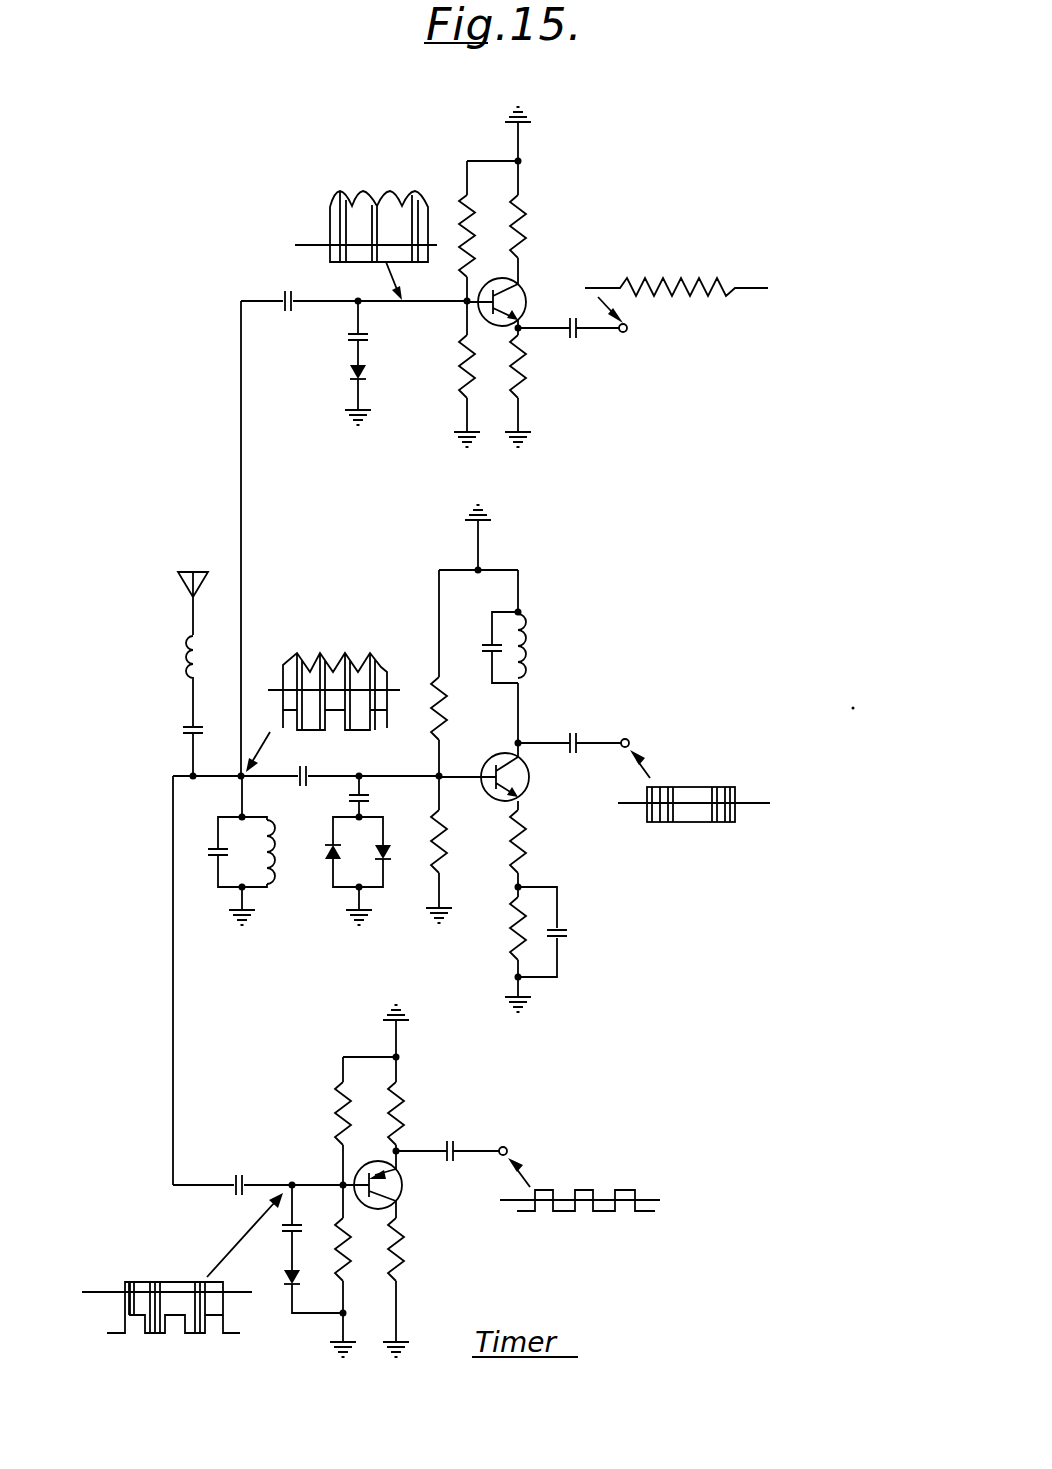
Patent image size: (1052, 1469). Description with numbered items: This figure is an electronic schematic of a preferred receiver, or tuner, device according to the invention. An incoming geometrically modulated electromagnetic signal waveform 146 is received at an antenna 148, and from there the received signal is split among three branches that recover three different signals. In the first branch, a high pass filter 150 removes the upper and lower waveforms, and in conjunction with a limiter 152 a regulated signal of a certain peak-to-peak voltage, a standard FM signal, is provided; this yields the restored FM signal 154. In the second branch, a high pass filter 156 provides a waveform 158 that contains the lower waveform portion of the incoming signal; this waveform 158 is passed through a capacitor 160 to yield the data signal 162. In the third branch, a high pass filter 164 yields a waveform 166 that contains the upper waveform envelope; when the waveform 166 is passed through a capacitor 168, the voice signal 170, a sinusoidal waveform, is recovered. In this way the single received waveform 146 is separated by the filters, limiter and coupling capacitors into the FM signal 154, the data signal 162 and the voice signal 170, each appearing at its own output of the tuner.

The geometrically modulated electromagnetic signal waveform 146 is at (343, 655).
The antenna 148 is at (178, 578).
The high pass filter 150 is at (305, 812).
The limiter 152 is at (392, 925).
The restored FM signal 154 is at (698, 855).
The high pass filter 156 is at (241, 1172).
The waveform 158 is at (246, 1358).
The capacitor 160 is at (479, 1121).
The data signal 162 is at (638, 1190).
The high pass filter 164 is at (318, 355).
The waveform 166 is at (337, 191).
The capacitor 168 is at (592, 372).
The voice signal 170 is at (692, 290).